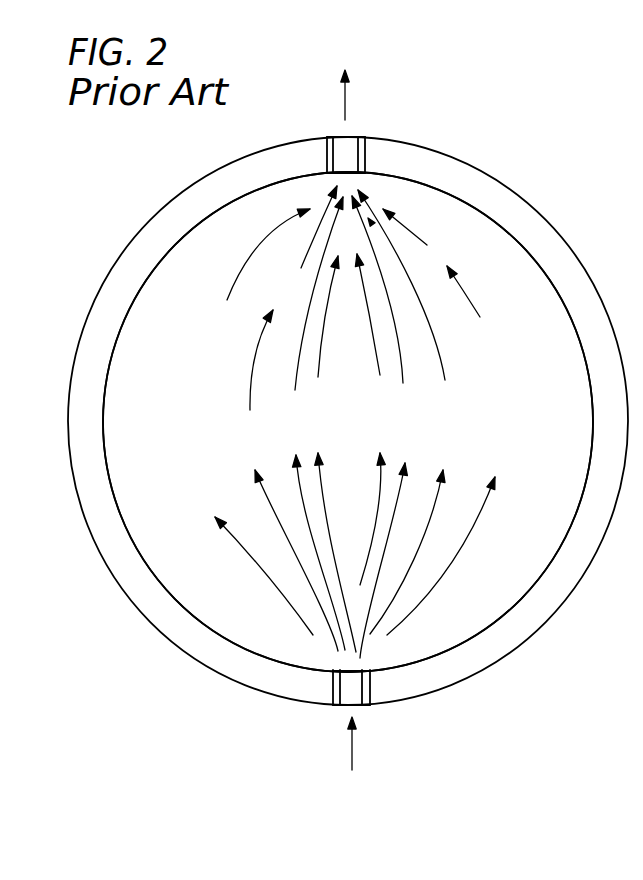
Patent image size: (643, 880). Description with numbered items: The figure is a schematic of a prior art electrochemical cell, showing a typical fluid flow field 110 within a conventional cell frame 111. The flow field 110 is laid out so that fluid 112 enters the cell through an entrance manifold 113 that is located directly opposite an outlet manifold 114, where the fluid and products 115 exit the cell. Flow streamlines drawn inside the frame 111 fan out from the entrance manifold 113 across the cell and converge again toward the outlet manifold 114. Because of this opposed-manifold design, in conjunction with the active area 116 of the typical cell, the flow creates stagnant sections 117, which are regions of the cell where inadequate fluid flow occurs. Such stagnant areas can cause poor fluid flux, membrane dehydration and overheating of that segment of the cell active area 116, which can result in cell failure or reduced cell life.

The fluid flow field 110 is at (351, 421).
The cell frame 111 is at (531, 203).
The fluid 112 is at (351, 757).
The entrance manifold 113 is at (347, 693).
The outlet manifold 114 is at (348, 143).
The fluid and products 115 is at (342, 82).
The active area 116 is at (182, 303).
The stagnant sections 117 is at (255, 251).